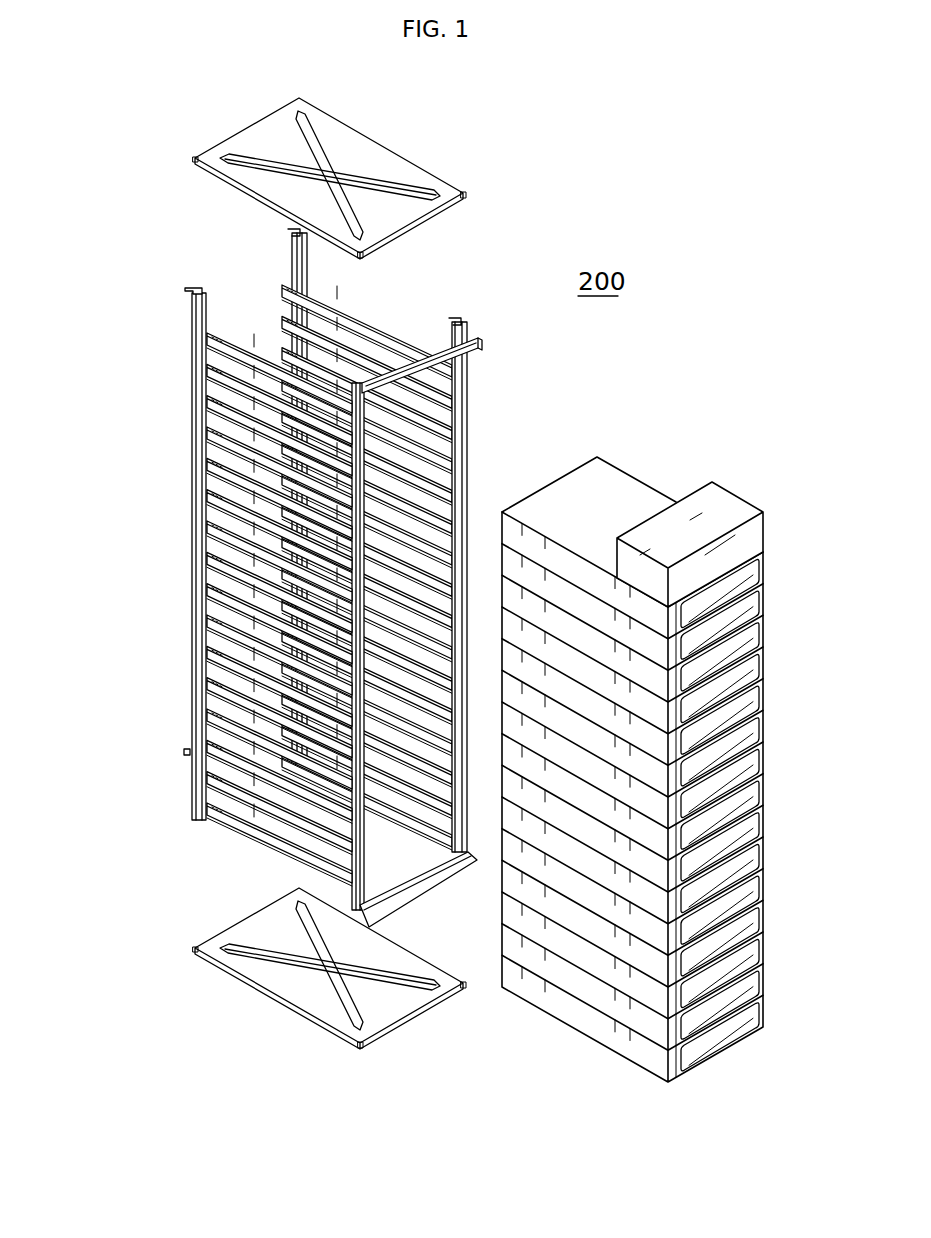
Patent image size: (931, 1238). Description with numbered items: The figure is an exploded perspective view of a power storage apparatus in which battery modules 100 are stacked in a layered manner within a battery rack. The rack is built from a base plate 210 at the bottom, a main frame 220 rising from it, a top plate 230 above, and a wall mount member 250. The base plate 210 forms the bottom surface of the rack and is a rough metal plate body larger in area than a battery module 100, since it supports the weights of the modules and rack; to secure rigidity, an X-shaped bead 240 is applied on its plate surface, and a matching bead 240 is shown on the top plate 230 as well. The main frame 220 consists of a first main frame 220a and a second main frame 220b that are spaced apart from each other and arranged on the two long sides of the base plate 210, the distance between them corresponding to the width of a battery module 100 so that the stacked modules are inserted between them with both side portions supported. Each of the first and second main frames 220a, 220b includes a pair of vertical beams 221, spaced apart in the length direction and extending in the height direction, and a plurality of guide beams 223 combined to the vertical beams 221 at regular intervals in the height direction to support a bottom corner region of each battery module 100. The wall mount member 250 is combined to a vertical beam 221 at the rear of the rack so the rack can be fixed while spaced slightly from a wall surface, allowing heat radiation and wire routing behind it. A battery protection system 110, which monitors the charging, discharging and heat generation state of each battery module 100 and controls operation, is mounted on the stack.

The battery module 100 is at (764, 667).
The battery protection system 110 is at (724, 498).
The base plate 210 is at (297, 986).
The main frame 220 is at (317, 578).
The first main frame 220a is at (296, 562).
The second main frame 220b is at (475, 429).
The vertical beam 221 is at (194, 513).
The guide beam 223 is at (228, 605).
The top plate 230 is at (373, 163).
The bead 240 is at (317, 152).
The wall mount member 250 is at (190, 289).